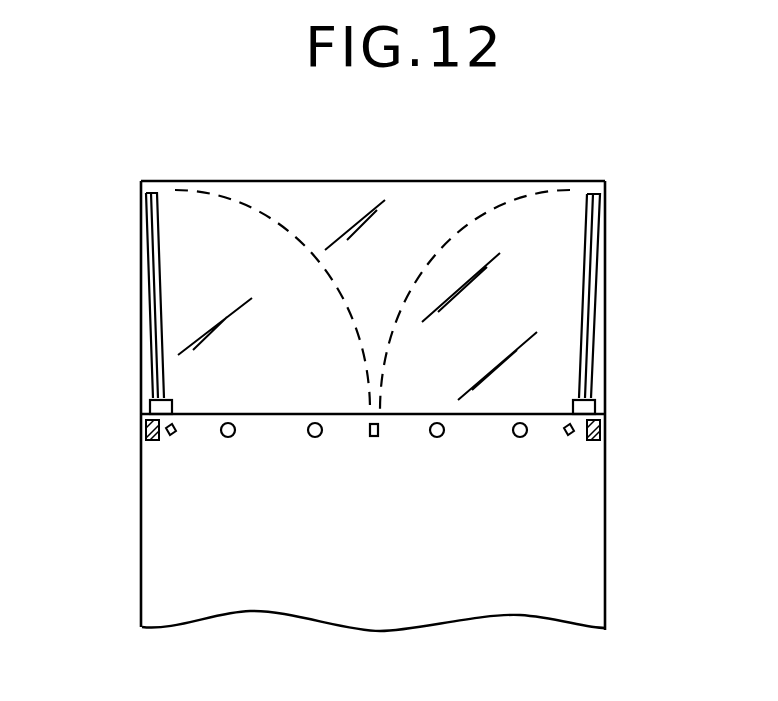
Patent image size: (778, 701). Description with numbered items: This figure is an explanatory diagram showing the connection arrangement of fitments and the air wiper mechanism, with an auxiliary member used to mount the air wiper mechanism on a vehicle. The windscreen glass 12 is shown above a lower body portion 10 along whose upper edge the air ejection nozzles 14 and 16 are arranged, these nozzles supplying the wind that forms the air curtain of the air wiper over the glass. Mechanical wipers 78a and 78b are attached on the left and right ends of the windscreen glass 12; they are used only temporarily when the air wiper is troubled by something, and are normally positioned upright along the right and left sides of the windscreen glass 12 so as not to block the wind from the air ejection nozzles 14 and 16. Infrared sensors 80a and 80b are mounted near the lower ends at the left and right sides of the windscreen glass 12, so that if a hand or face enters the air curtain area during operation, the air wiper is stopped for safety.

The base body 10 is at (597, 530).
The windscreen glass 12 is at (463, 190).
The air ejection nozzle 14 is at (380, 430).
The air ejection nozzle 16 is at (312, 438).
The mechanical wiper 78a is at (148, 243).
The mechanical wiper 78b is at (598, 222).
The infrared sensor 80a is at (140, 436).
The infrared sensor 80b is at (602, 425).